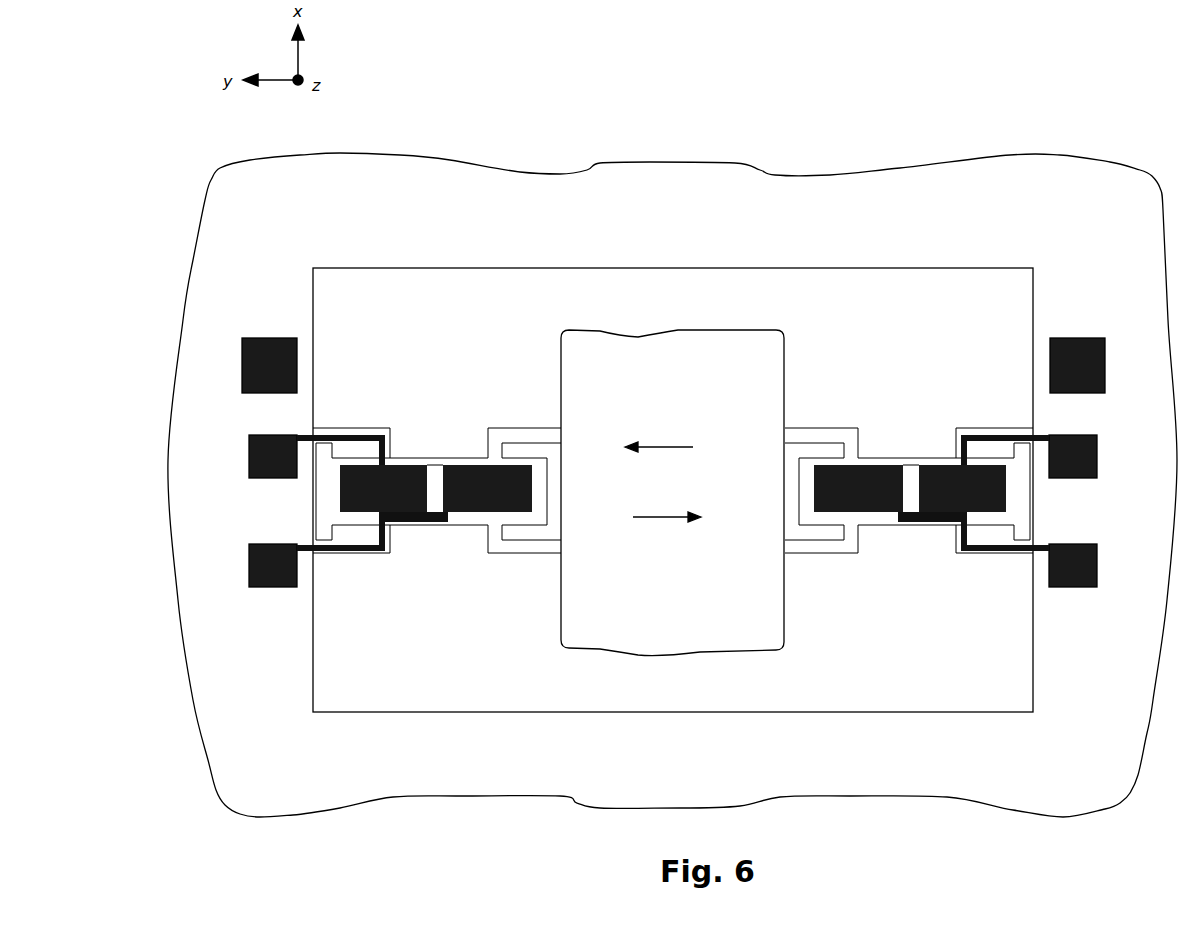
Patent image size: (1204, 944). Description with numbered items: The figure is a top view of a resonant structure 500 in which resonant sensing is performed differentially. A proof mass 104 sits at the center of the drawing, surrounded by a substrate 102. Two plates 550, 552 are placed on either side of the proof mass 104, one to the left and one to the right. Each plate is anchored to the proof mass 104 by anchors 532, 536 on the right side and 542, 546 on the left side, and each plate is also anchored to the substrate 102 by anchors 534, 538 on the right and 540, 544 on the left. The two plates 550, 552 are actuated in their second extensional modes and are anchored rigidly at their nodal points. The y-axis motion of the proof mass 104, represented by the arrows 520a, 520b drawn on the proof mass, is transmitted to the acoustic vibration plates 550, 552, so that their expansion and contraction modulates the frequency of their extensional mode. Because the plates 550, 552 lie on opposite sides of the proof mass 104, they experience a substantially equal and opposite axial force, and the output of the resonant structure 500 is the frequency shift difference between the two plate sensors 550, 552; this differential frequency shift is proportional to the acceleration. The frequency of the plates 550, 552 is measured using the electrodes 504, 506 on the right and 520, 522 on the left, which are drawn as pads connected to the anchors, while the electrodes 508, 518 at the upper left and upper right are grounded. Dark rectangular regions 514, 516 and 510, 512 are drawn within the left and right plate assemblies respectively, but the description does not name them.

The resonant structure 500 is at (1016, 74).
The substrate 102 is at (782, 178).
The proof mass 104 is at (580, 406).
The electrode 504 is at (1098, 452).
The electrode 506 is at (1098, 563).
The electrode 508 is at (1105, 356).
The piezoresistive element 510 is at (858, 488).
The piezoresistive element 512 is at (962, 488).
The piezoresistive element 514 is at (383, 488).
The piezoresistive element 516 is at (487, 488).
The electrode 518 is at (242, 358).
The electrode 520 is at (249, 453).
The arrow 520a is at (667, 510).
The arrow 520b is at (659, 439).
The electrode 522 is at (249, 562).
The anchor 532 is at (835, 433).
The anchor 534 is at (994, 428).
The anchor 536 is at (822, 554).
The anchor 538 is at (984, 554).
The anchor 540 is at (357, 433).
The anchor 542 is at (505, 428).
The anchor 544 is at (350, 554).
The anchor 546 is at (513, 554).
The plate 550 is at (437, 527).
The plate 552 is at (872, 524).